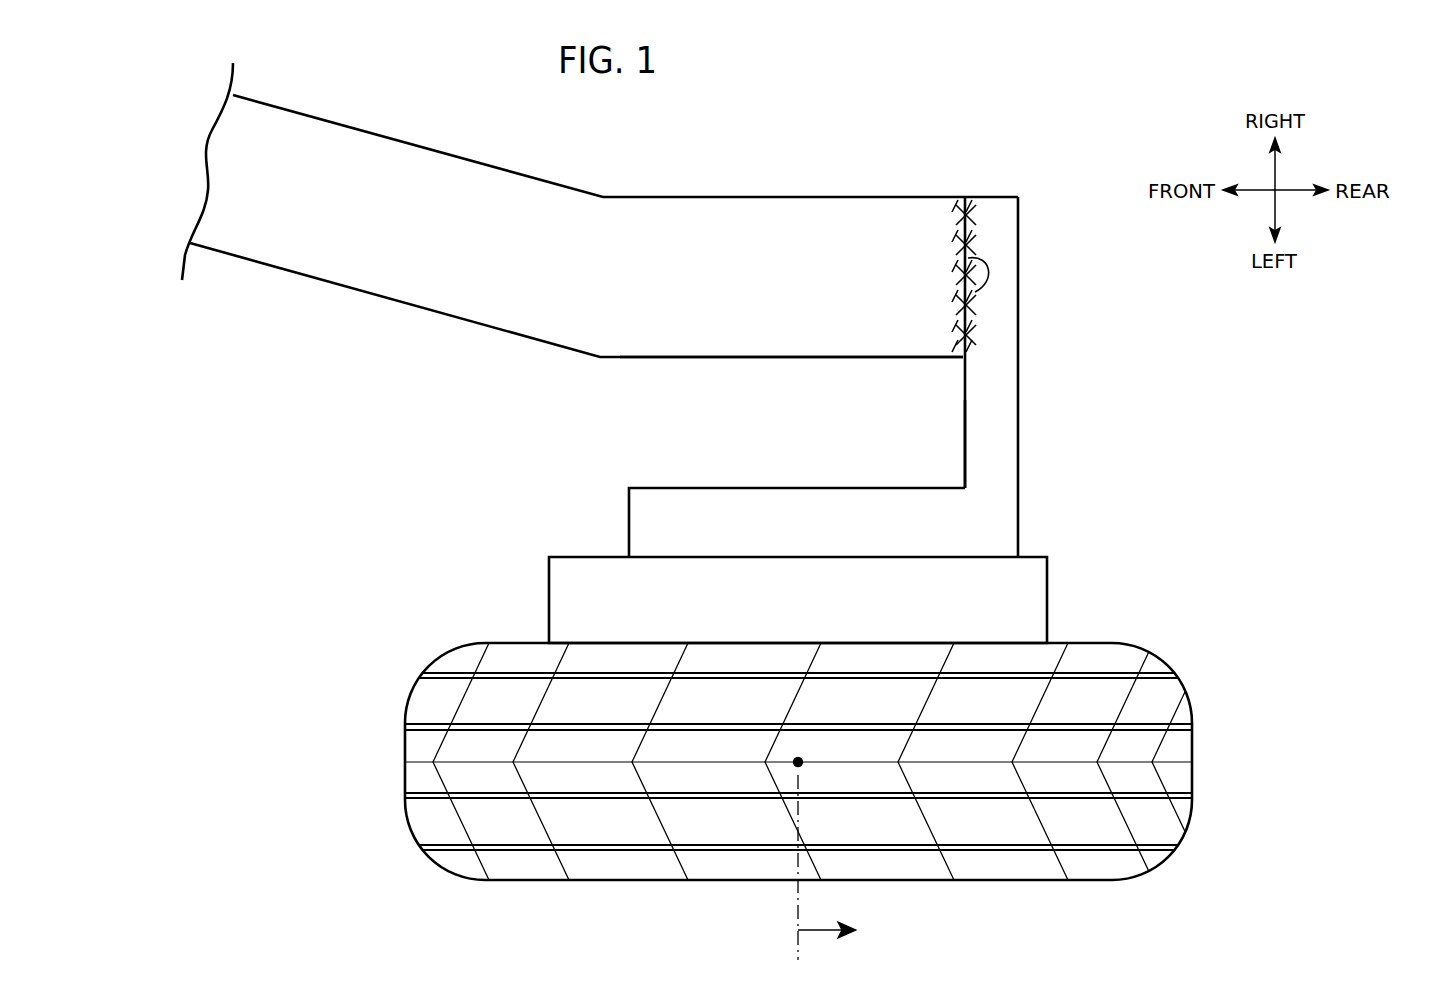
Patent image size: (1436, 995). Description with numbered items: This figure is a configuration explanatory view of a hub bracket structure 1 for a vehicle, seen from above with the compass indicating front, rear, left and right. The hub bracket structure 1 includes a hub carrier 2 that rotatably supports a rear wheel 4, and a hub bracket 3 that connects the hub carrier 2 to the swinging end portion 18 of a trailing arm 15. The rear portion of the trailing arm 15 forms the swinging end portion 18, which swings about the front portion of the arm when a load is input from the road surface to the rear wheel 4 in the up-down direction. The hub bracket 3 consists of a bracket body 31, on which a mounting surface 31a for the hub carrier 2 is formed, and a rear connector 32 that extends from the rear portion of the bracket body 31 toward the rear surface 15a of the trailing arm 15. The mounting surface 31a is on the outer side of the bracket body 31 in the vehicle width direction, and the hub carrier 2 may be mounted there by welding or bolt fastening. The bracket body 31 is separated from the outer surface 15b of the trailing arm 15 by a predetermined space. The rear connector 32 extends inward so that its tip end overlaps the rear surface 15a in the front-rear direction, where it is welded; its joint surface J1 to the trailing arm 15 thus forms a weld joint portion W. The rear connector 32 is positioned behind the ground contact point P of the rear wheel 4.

The hub bracket structure 1 is at (1118, 400).
The swinging end portion 18 is at (813, 171).
The trailing arm 15 is at (890, 197).
The rear surface 15a is at (955, 298).
The outer surface 15b is at (702, 362).
The weld joint portion W is at (987, 227).
The joint surface J1 is at (975, 325).
The hub bracket 3 is at (805, 372).
The rear connector 32 is at (990, 425).
The bracket body 31 is at (832, 523).
The mounting surface 31a is at (732, 565).
The hub carrier 2 is at (1050, 603).
The rear wheel 4 is at (1185, 685).
The ground contact point P is at (789, 778).